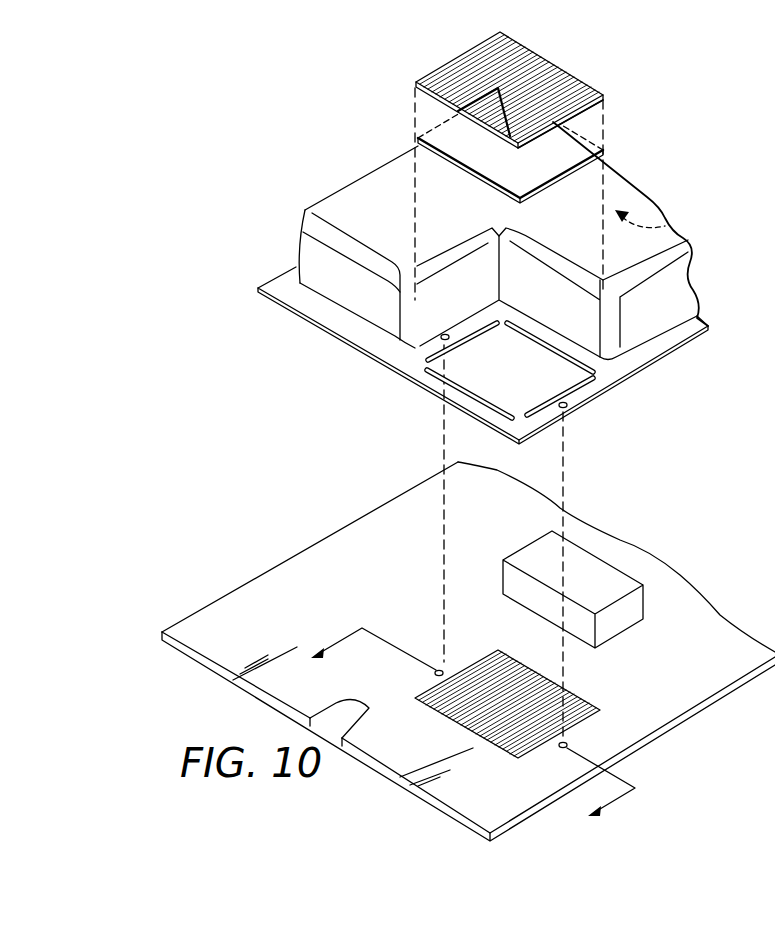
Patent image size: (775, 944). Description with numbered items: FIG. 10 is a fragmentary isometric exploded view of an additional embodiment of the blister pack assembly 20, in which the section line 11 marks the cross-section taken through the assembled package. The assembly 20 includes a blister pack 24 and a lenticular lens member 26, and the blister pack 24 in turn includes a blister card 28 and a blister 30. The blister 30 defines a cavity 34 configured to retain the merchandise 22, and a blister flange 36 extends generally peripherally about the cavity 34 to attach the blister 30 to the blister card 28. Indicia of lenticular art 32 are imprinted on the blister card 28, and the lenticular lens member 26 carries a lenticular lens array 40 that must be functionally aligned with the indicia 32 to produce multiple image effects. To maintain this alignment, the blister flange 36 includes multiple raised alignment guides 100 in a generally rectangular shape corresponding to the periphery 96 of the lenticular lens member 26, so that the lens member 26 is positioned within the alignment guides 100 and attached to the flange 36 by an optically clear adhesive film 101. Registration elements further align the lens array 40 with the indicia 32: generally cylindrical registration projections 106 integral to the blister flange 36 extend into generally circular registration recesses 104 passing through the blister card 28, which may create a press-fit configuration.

The blister pack assembly 20 is at (322, 146).
The merchandise 22 is at (640, 606).
The blister pack 24 is at (358, 148).
The lenticular lens member 26 is at (631, 70).
The blister card 28 is at (702, 711).
The blister 30 is at (305, 210).
The indicia of lenticular art 32 is at (583, 701).
The cavity 34 is at (668, 224).
The blister flange 36 is at (362, 345).
The lenticular lens array 40 is at (588, 64).
The periphery 96 is at (592, 97).
The raised alignment guides 100 is at (450, 382).
The optically clear adhesive film 101 is at (603, 172).
The registration recess 104 is at (439, 668).
The registration projection 106 is at (445, 341).
The section line 11 is at (475, 724).